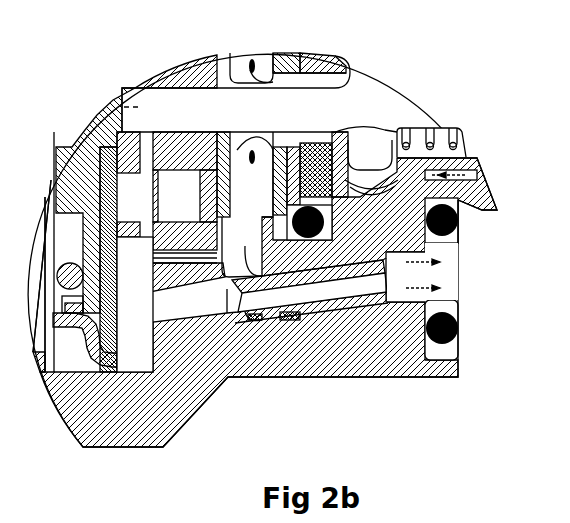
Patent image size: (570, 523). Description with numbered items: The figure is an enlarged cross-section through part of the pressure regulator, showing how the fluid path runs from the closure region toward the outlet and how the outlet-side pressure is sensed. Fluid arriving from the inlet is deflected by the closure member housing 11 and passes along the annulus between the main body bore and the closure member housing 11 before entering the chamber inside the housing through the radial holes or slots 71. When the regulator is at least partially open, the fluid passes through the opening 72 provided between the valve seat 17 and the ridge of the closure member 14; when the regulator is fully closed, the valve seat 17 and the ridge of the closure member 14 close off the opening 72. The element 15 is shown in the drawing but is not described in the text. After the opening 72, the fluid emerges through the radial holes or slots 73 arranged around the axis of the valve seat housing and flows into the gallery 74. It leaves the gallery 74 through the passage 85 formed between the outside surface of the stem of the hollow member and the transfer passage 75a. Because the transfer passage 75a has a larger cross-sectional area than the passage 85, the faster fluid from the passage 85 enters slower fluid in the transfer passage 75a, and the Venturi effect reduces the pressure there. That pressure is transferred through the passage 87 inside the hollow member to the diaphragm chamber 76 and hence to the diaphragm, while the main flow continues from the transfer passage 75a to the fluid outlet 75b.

The closure member housing 11 is at (472, 153).
The closure member 14 is at (0, 497).
The housing lip 15 is at (0, 450).
The valve seat 17 is at (338, 62).
The radial holes or slots 71 is at (360, 182).
The opening 72 is at (320, 143).
The radial holes or slots 73 is at (248, 186).
The gallery 74 is at (245, 240).
The transfer passage 75a is at (398, 278).
The fluid outlet 75b is at (447, 280).
The diaphragm chamber 76 is at (137, 343).
The passage 85 is at (289, 315).
The passage 87 is at (273, 297).